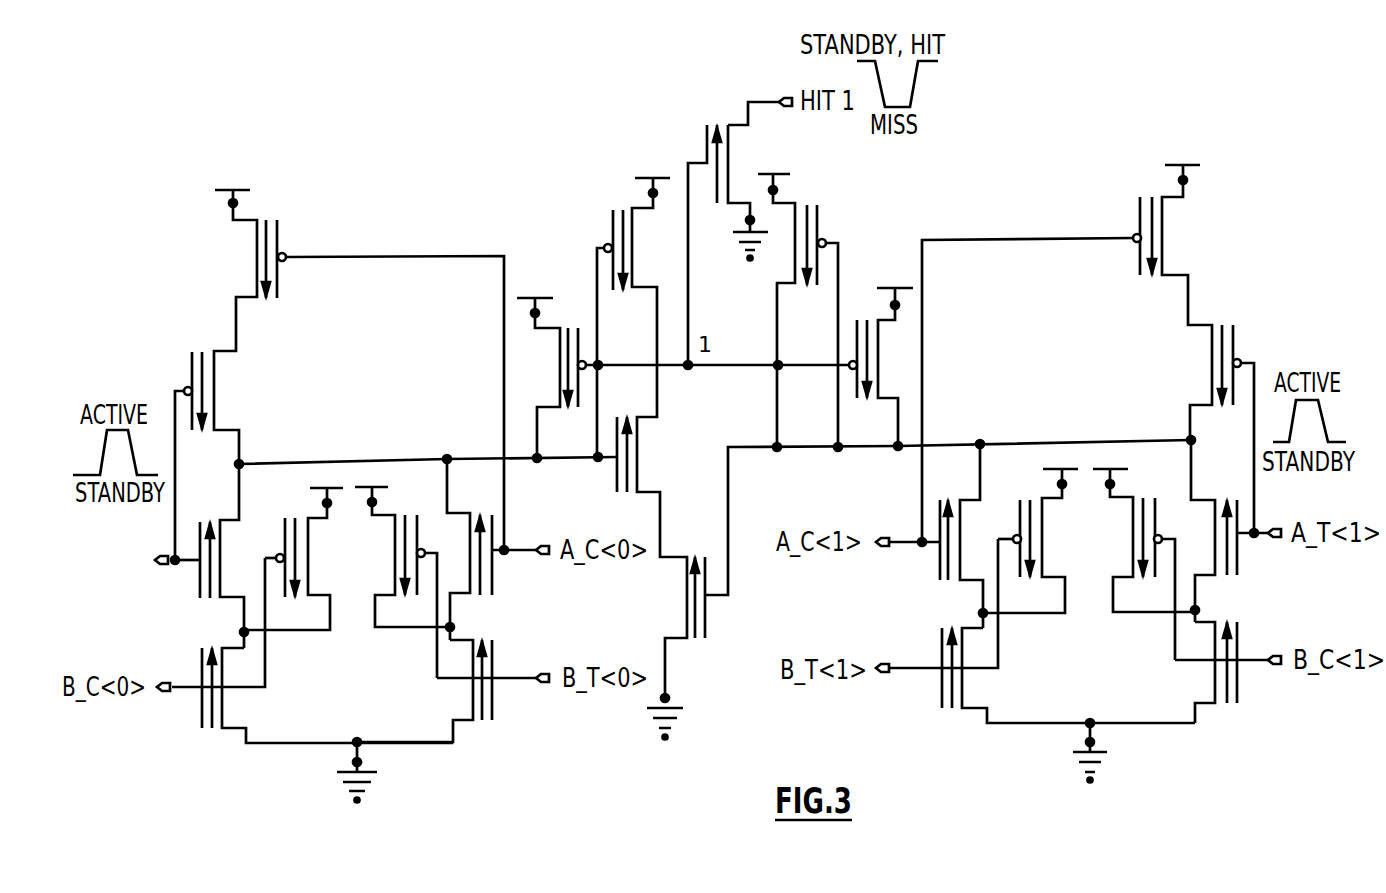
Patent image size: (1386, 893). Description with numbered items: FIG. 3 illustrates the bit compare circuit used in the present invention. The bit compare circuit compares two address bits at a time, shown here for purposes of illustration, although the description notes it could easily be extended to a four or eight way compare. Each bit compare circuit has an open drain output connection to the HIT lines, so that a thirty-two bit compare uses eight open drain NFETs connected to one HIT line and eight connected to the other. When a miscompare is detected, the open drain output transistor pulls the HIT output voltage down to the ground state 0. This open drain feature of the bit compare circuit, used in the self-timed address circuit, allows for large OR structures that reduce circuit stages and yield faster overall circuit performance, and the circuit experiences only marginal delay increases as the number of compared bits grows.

The bit-0 input signal A_T 0 is at (131, 560).